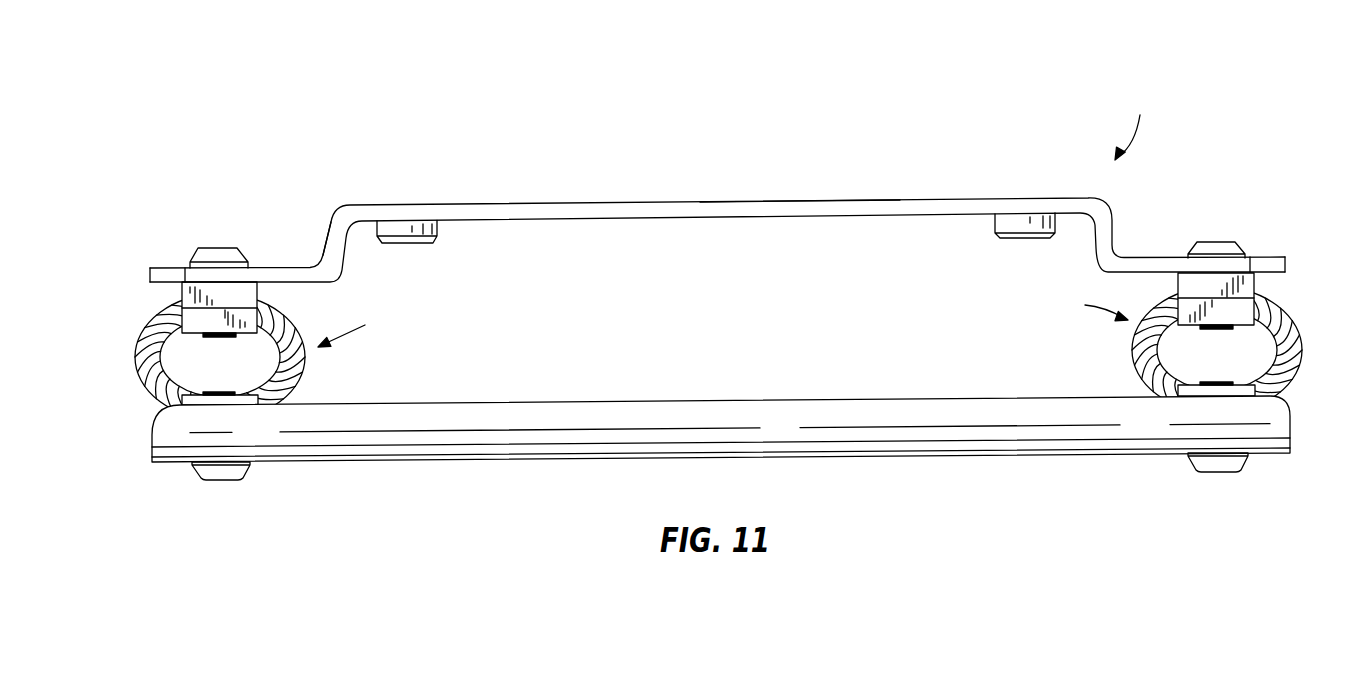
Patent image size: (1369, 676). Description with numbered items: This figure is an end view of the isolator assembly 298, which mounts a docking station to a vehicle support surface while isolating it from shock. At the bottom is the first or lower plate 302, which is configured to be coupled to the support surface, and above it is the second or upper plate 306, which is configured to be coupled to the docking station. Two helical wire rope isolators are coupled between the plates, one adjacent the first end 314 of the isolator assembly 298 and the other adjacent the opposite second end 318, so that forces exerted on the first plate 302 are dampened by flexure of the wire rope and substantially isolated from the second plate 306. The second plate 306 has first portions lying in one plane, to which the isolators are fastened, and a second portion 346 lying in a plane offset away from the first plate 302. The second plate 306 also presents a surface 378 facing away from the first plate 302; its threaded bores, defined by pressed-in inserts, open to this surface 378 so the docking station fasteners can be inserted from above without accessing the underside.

The isolator assembly 298 is at (1138, 123).
The first plate 302 is at (942, 433).
The second plate 306 is at (680, 210).
The first end 314 is at (150, 278).
The second end 318 is at (1287, 268).
The second portion 346 is at (813, 200).
The surface 378 is at (540, 202).